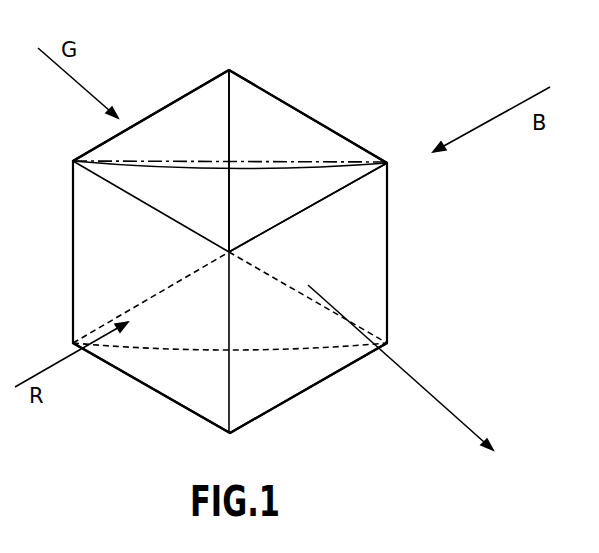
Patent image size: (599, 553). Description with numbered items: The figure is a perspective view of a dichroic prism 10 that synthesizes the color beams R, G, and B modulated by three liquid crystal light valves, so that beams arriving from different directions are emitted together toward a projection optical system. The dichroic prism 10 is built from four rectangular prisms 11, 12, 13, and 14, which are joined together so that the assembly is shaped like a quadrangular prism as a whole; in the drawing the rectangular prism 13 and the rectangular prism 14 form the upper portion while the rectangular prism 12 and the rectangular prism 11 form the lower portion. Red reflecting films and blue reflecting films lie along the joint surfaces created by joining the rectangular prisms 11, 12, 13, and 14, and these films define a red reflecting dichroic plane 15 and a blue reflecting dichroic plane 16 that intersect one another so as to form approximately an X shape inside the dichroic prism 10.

The dichroic prism 10 is at (367, 60).
The rectangular prism 11 is at (315, 332).
The rectangular prism 12 is at (170, 370).
The rectangular prism 13 is at (177, 113).
The rectangular prism 14 is at (330, 137).
The red reflecting dichroic plane 15 is at (359, 183).
The blue reflecting dichroic plane 16 is at (235, 114).